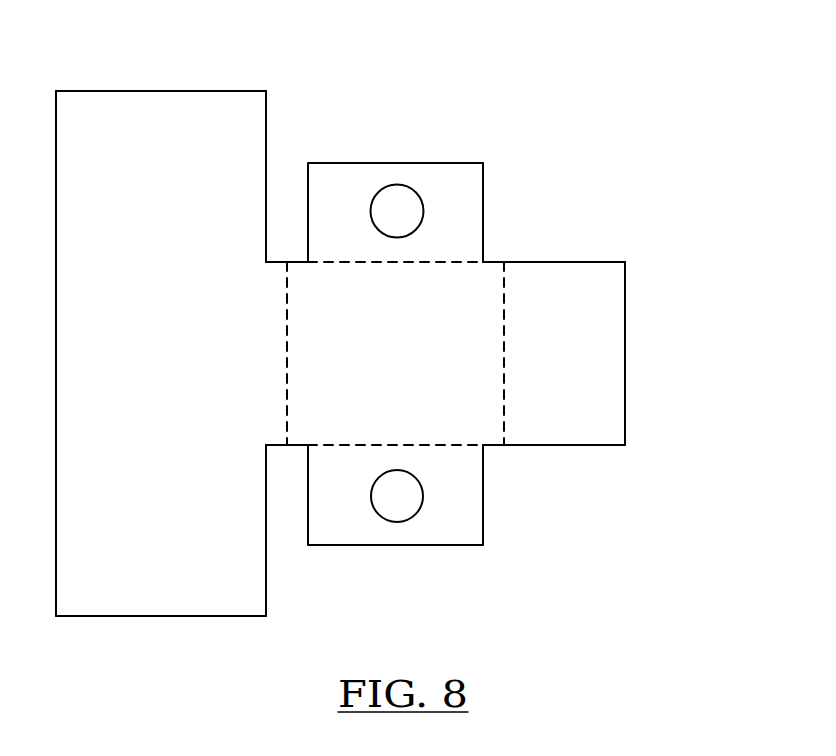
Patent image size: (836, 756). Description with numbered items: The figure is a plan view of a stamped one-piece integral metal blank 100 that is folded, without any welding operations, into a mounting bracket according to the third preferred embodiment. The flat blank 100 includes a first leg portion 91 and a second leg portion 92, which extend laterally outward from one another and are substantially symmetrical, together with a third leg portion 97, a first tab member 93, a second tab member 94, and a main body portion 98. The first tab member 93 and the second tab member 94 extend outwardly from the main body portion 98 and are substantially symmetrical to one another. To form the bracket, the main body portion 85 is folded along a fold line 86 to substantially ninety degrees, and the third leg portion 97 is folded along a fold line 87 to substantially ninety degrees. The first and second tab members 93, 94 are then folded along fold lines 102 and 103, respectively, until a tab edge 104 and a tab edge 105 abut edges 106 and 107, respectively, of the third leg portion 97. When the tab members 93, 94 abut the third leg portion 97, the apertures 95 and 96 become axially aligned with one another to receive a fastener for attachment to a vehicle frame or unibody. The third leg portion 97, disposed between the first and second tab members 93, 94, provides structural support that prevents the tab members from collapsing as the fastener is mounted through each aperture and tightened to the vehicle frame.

The main body portion 85 is at (118, 290).
The fold line 86 is at (287, 375).
The fold line 87 is at (504, 355).
The first leg portion 91 is at (147, 577).
The second leg portion 92 is at (156, 125).
The first tab member 93 is at (448, 530).
The second tab member 94 is at (370, 178).
The aperture 95 is at (395, 515).
The aperture 96 is at (405, 203).
The third leg portion 97 is at (598, 358).
The main body portion 98 is at (335, 298).
The one-piece integral metal blank 100 is at (675, 137).
The fold line 102 is at (428, 446).
The fold line 103 is at (455, 262).
The tab edge 104 is at (484, 518).
The tab edge 105 is at (484, 193).
The edge 106 is at (612, 445).
The edge 107 is at (600, 262).